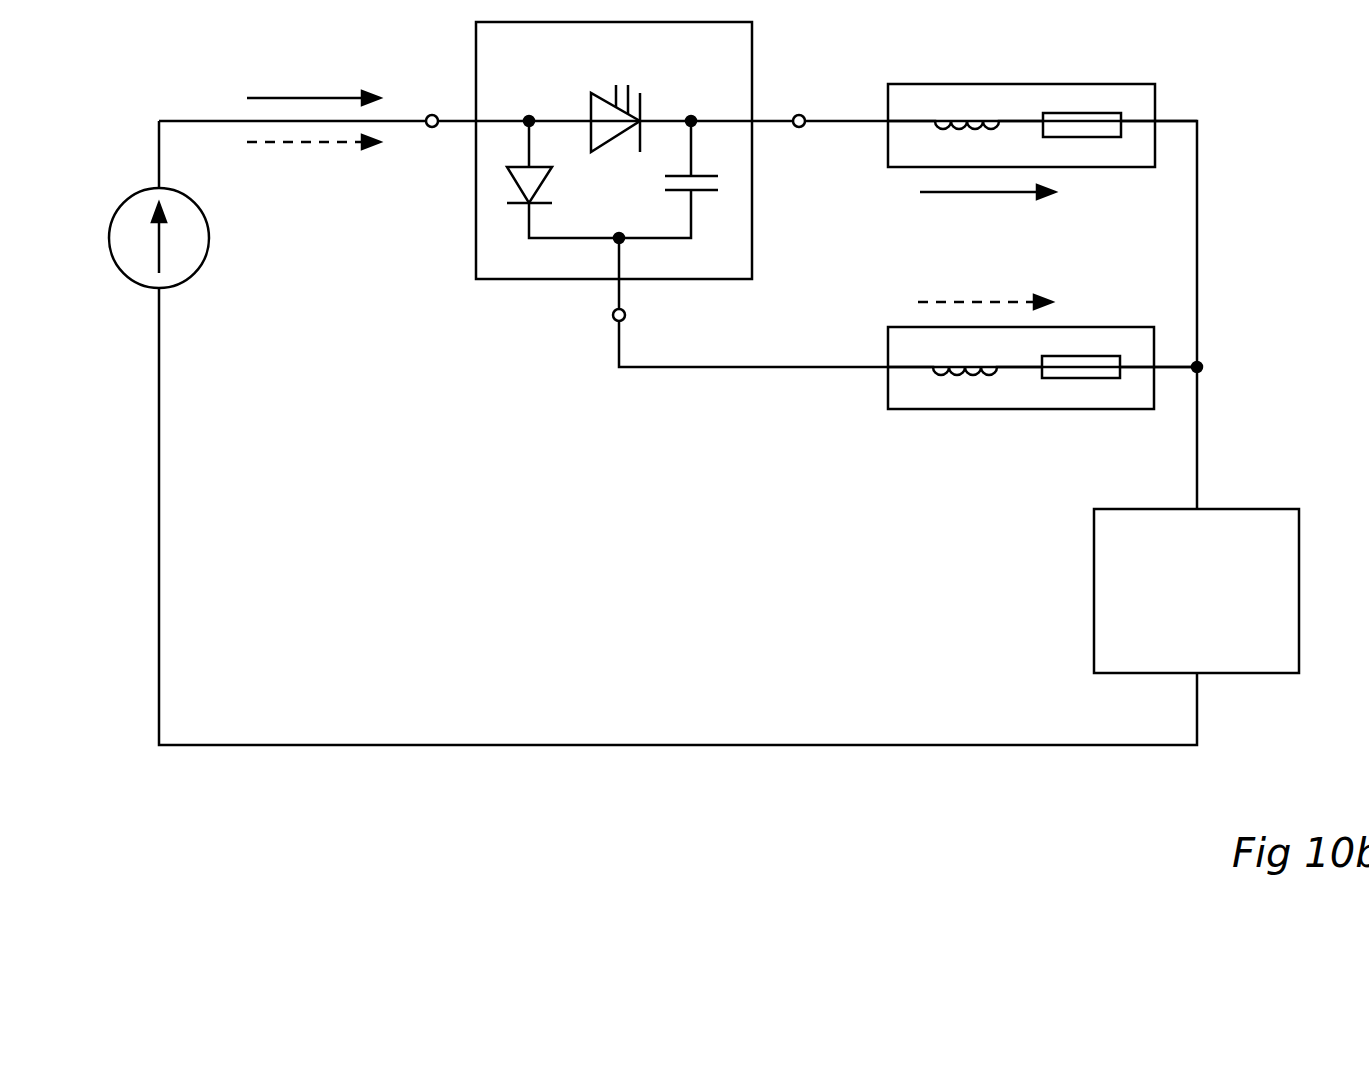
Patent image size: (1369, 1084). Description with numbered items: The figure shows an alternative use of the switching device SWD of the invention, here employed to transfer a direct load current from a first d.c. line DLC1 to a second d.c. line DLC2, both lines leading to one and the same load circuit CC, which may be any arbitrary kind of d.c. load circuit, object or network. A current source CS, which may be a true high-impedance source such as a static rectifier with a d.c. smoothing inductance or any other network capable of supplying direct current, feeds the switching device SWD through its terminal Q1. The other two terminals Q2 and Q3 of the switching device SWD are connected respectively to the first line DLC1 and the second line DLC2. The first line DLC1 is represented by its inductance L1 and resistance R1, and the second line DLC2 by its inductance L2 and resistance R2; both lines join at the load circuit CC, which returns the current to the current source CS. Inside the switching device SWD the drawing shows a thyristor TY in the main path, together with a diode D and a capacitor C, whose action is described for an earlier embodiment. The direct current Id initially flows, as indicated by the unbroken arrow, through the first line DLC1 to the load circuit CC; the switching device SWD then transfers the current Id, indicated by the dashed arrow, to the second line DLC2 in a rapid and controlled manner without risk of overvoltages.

The current source CS is at (183, 285).
The terminal Q1 is at (432, 112).
The terminal Q2 is at (799, 112).
The terminal Q3 is at (633, 315).
The direct current Id is at (651, 182).
The switching device SWD is at (548, 61).
The thyristor TY is at (648, 92).
The diode D is at (546, 188).
The capacitor C is at (700, 198).
The first d.c. line DLC1 is at (1122, 154).
The inductance L1 is at (973, 117).
The resistance R1 is at (1077, 113).
The second d.c. line DLC2 is at (1123, 323).
The inductance L2 is at (971, 378).
The resistance R2 is at (1075, 383).
The load circuit CC is at (1156, 660).